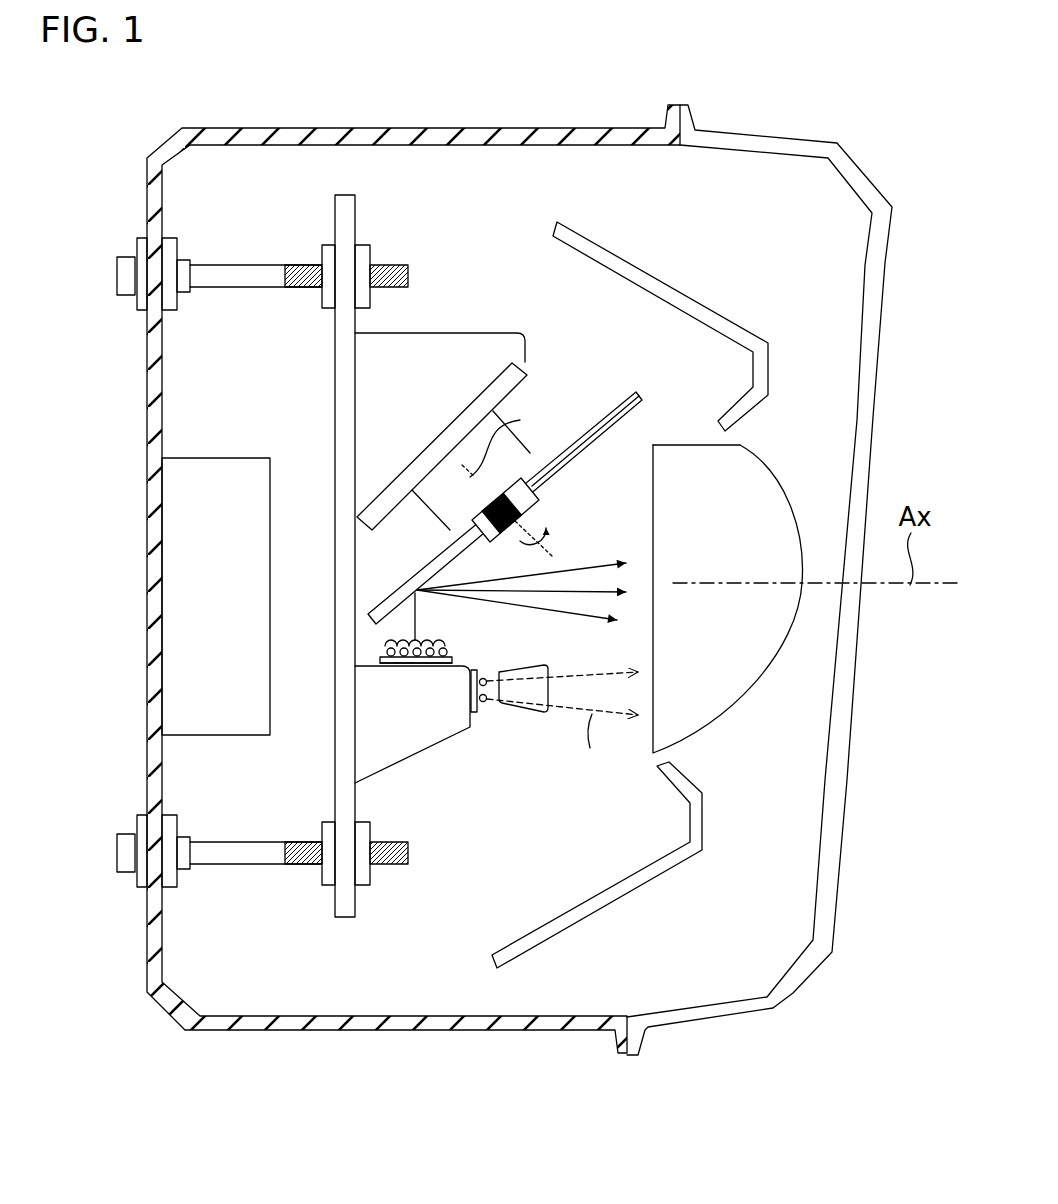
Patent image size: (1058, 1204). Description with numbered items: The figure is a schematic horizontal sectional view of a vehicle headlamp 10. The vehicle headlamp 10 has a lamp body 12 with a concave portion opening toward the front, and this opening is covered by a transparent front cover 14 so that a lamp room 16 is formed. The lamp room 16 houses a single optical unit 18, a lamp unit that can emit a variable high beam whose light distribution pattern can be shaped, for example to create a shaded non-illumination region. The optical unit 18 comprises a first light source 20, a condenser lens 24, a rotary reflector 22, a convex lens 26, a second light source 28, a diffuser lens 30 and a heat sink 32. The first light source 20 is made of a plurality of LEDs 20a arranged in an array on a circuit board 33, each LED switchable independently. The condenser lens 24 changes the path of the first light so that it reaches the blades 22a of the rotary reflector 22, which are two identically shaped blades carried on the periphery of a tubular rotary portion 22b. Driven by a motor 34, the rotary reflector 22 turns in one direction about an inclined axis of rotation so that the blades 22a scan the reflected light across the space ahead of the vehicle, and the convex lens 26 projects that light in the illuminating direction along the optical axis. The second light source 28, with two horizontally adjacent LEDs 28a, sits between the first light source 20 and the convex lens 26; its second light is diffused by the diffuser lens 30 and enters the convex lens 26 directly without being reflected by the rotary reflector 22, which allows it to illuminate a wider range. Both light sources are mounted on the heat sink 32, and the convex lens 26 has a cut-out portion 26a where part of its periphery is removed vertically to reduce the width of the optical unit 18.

The vehicle headlamp 10 is at (508, 1187).
The lamp body 12 is at (248, 1030).
The front cover 14 is at (797, 993).
The lamp room 16 is at (493, 223).
The optical unit 18 is at (518, 861).
The first light source 20 is at (263, 605).
The LEDs 20a is at (383, 650).
The rotary reflector 22 is at (506, 458).
The blades 22a is at (621, 392).
The tubular rotary portion 22b is at (570, 436).
The condenser lens 24 is at (390, 643).
The convex lens 26 is at (793, 564).
The cut-out portion 26a is at (683, 445).
The second light source 28 is at (474, 714).
The LEDs 28a is at (484, 678).
The diffuser lens 30 is at (513, 711).
The heat sink 32 is at (375, 783).
The circuit board 33 is at (393, 664).
The motor 34 is at (433, 510).